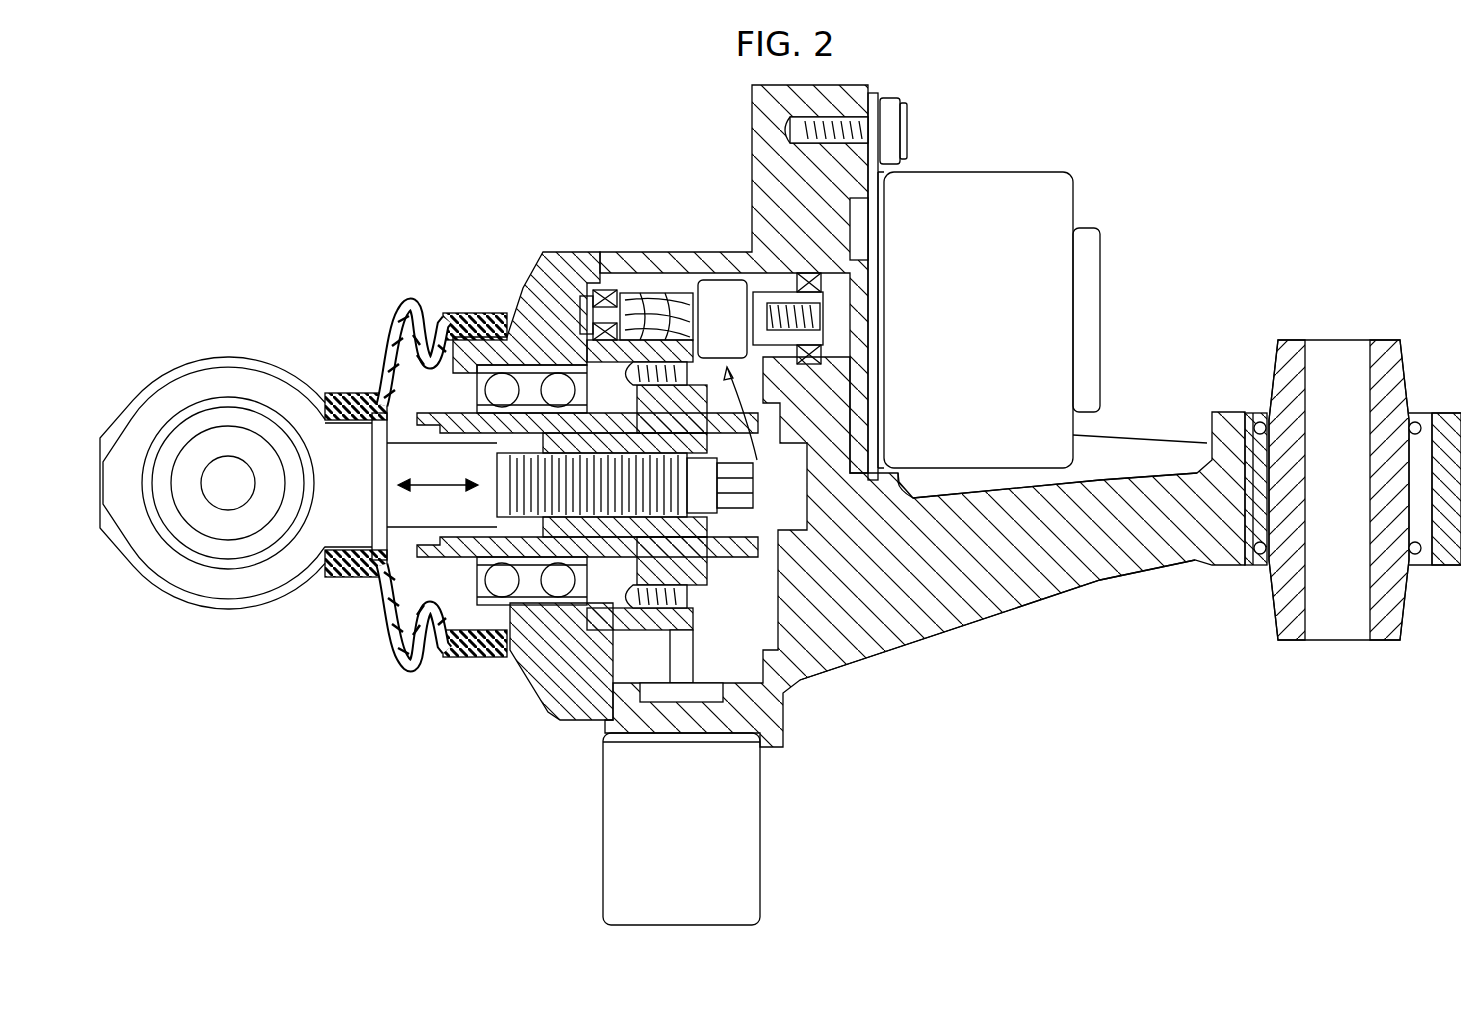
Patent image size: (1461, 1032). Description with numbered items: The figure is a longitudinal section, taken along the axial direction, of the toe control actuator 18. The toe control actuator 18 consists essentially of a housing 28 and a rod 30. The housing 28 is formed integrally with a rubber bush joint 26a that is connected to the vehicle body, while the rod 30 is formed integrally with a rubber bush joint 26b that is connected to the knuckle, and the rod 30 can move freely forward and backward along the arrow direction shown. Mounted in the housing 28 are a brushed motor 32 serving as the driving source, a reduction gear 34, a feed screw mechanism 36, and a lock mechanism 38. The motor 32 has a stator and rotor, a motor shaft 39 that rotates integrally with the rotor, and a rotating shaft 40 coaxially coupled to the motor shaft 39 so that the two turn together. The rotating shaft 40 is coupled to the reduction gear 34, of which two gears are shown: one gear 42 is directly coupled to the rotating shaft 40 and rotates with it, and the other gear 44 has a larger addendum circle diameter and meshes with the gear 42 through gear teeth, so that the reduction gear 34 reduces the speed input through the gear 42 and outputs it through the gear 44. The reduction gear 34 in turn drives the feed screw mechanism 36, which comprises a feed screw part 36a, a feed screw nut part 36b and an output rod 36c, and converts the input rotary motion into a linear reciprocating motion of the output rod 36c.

The toe control actuator 18 is at (1215, 221).
The rubber bush joint 26a is at (1382, 617).
The rubber bush joint 26b is at (237, 598).
The housing 28 is at (978, 597).
The rod 30 is at (408, 458).
The motor 32 is at (1002, 200).
The reduction gear 34 is at (666, 299).
The feed screw mechanism 36 is at (556, 660).
The feed screw part 36a is at (473, 650).
The feed screw nut part 36b is at (515, 630).
The output rod 36c is at (540, 497).
The lock mechanism 38 is at (835, 490).
The motor shaft 39 is at (820, 313).
The rotating shaft 40 is at (678, 252).
The gear 42 is at (625, 320).
The gear 44 is at (662, 300).